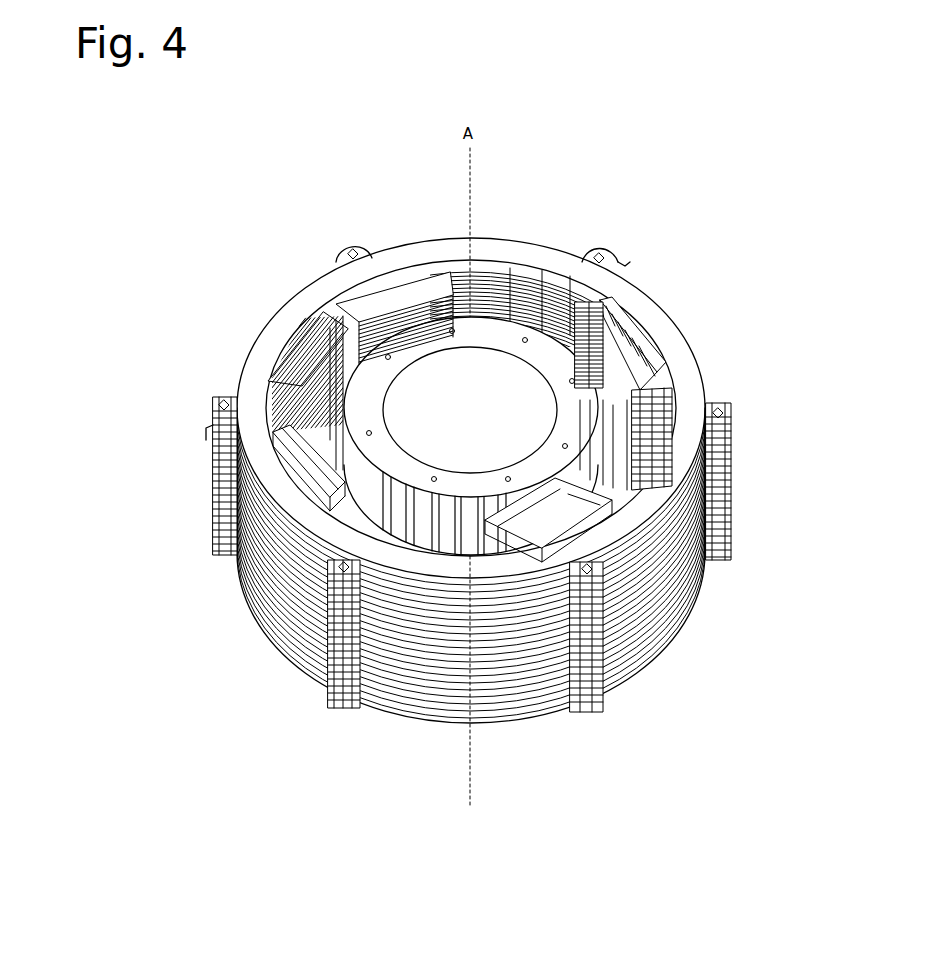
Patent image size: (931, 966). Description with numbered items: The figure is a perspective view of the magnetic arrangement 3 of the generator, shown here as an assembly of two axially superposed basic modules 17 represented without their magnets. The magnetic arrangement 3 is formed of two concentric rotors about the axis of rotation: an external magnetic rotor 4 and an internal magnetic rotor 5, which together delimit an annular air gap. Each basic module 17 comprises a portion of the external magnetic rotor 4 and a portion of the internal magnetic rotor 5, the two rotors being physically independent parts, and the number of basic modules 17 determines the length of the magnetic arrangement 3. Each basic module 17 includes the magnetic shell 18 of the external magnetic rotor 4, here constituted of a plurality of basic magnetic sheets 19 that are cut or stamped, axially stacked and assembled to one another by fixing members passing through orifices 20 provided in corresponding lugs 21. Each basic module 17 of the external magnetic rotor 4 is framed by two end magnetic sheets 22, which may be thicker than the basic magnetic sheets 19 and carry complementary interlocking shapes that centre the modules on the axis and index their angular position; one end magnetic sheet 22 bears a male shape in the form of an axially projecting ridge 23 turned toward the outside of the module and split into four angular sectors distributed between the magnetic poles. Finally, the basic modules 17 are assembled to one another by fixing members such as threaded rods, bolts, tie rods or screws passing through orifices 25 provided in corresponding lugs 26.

The magnetic arrangement 3 is at (567, 200).
The external magnetic rotor 4 is at (672, 296).
The internal magnetic rotor 5 is at (484, 318).
The basic module 17 is at (690, 525).
The magnetic shell 18 is at (647, 667).
The basic magnetic sheet 19 is at (552, 665).
The orifice 20 is at (353, 252).
The lug 21 is at (348, 265).
The end magnetic sheet 22 is at (305, 303).
The axially projecting ridge 23 is at (405, 262).
The orifice 25 is at (599, 254).
The lug 26 is at (625, 264).